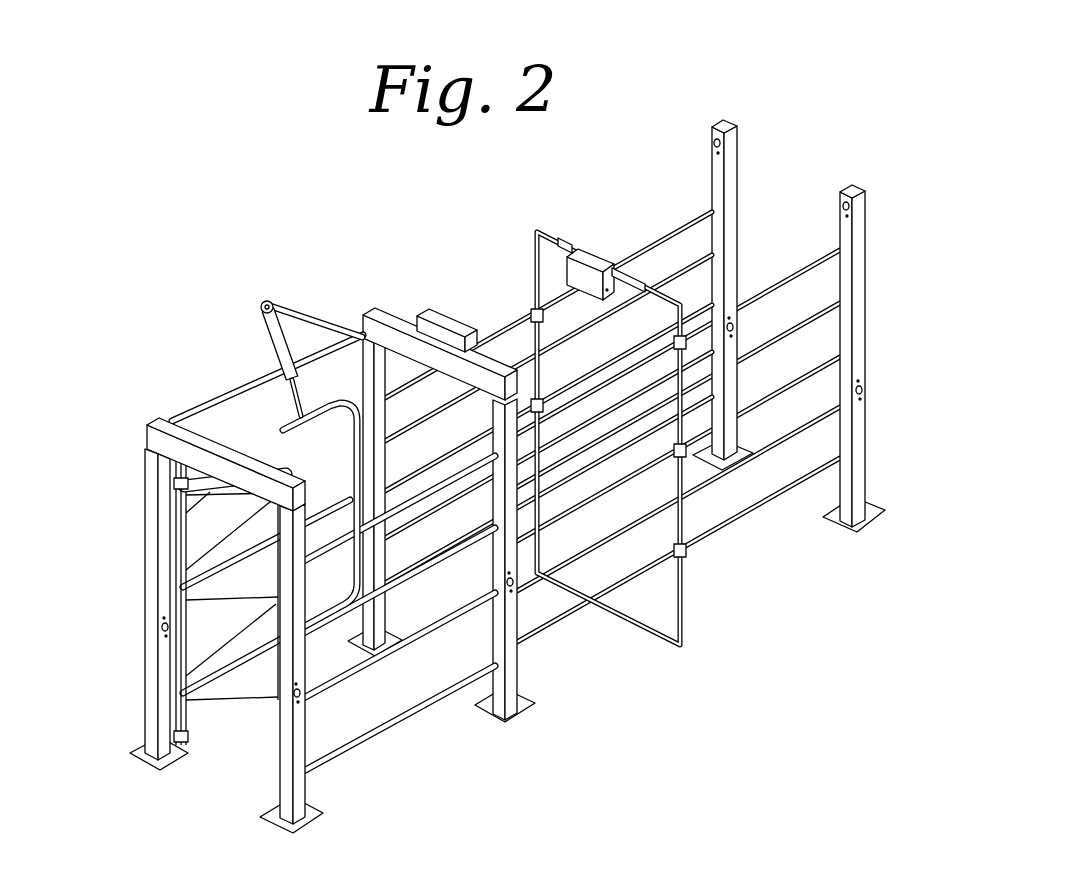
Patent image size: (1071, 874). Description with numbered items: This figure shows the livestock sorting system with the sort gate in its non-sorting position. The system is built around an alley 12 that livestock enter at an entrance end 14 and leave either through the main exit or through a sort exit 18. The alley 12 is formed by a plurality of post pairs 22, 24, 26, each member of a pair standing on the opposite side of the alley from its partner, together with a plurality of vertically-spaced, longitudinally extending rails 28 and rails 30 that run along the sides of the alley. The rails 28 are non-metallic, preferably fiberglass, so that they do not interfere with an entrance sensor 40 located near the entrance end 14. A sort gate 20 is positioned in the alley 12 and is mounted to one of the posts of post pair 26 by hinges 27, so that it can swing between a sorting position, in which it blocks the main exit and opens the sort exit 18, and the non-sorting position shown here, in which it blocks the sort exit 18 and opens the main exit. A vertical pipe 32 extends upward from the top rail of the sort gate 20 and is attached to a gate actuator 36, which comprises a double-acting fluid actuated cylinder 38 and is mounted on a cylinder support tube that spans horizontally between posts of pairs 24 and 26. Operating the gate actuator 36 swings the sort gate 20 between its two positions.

The alley 12 is at (382, 515).
The entrance end 14 is at (645, 372).
The sort exit 18 is at (226, 426).
The sort gate 20 is at (286, 445).
The post pair 22 is at (711, 381).
The post pair 24 is at (370, 352).
The post pair 26 is at (146, 462).
The hinges 27 is at (180, 483).
The rails 28 is at (796, 452).
The rails 30 is at (367, 603).
The vertical pipe 32 is at (313, 345).
The gate actuator 36 is at (266, 300).
The double-acting fluid actuated cylinder 38 is at (270, 338).
The entrance sensor 40 is at (537, 262).